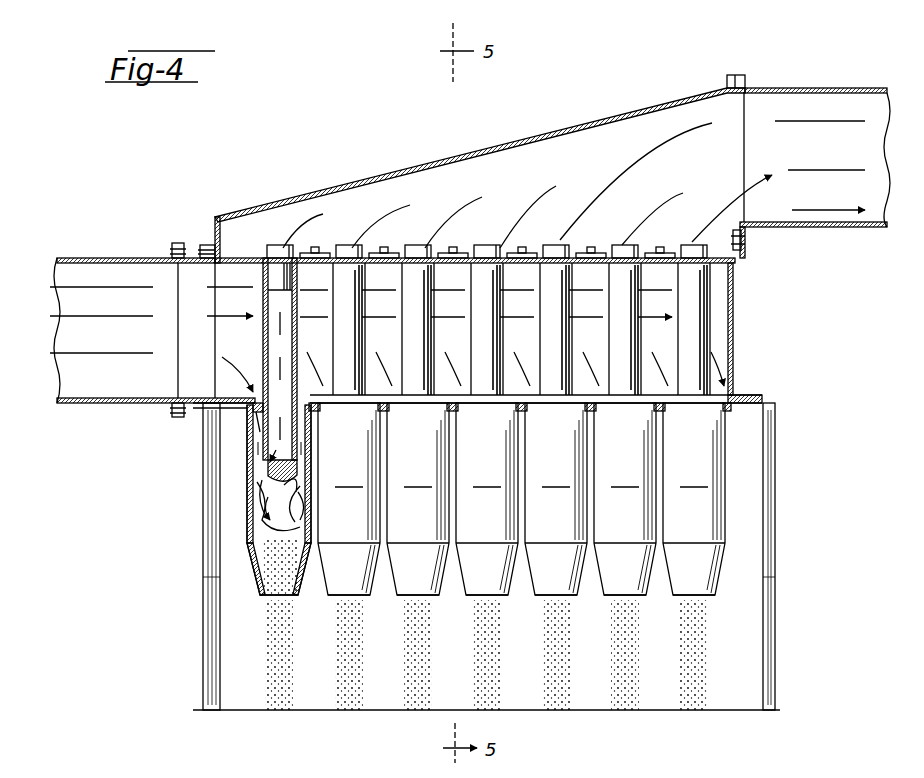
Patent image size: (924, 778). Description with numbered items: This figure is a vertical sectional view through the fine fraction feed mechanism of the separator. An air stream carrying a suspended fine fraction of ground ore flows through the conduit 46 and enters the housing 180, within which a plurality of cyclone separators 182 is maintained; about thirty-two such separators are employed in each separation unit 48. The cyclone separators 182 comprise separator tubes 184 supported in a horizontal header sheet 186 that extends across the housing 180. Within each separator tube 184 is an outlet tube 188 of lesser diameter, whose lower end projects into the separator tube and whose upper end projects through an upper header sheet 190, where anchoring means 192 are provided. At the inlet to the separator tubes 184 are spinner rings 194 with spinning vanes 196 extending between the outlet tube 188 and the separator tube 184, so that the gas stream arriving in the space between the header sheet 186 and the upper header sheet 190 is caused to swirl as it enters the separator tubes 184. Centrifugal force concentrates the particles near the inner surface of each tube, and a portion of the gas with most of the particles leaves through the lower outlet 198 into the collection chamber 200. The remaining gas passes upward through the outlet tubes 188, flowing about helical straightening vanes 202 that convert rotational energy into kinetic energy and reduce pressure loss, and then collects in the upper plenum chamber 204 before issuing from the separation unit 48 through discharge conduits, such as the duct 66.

The conduit 46 is at (98, 258).
The separation unit 48 is at (785, 472).
The outlet duct 66 is at (803, 88).
The housing 180 is at (208, 513).
The cyclone separators 182 is at (738, 395).
The separator tubes 184 is at (521, 499).
The header sheet 186 is at (240, 403).
The outlet tube 188 is at (293, 349).
The upper header sheet 190 is at (217, 258).
The anchoring means 192 is at (300, 255).
The spinner rings 194 is at (238, 394).
The spinning vanes 196 is at (255, 415).
The lower outlet 198 is at (294, 598).
The collection chamber 200 is at (228, 687).
The helical straightening vanes 202 is at (302, 482).
The upper plenum chamber 204 is at (563, 136).